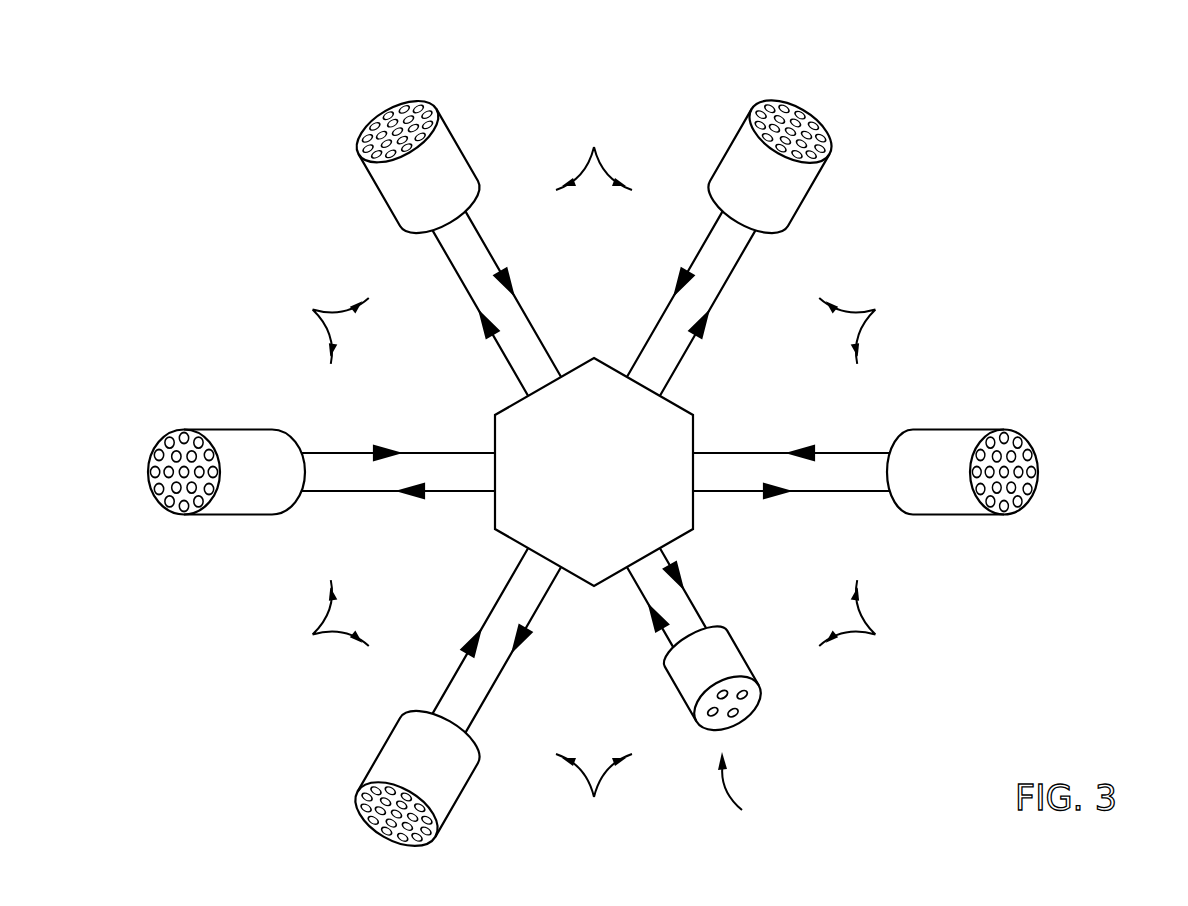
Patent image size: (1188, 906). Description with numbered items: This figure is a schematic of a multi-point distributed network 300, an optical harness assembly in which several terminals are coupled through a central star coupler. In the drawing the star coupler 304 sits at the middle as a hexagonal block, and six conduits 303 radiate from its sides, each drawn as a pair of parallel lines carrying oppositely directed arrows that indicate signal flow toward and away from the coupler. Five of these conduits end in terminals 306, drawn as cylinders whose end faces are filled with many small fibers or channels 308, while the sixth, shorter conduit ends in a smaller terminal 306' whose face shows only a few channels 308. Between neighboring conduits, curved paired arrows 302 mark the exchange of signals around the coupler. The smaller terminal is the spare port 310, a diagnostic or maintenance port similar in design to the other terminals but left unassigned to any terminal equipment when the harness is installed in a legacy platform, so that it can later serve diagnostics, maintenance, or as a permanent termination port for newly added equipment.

The multi-point distributed network 300 is at (1075, 125).
The fluid exchange flow direction 302 is at (594, 472).
The conduit 303 is at (447, 257).
The central manifold 304 is at (608, 352).
The module 306 is at (593, 469).
The smaller module 306' is at (699, 679).
The channels 308 is at (385, 130).
The spare port 310 is at (741, 798).